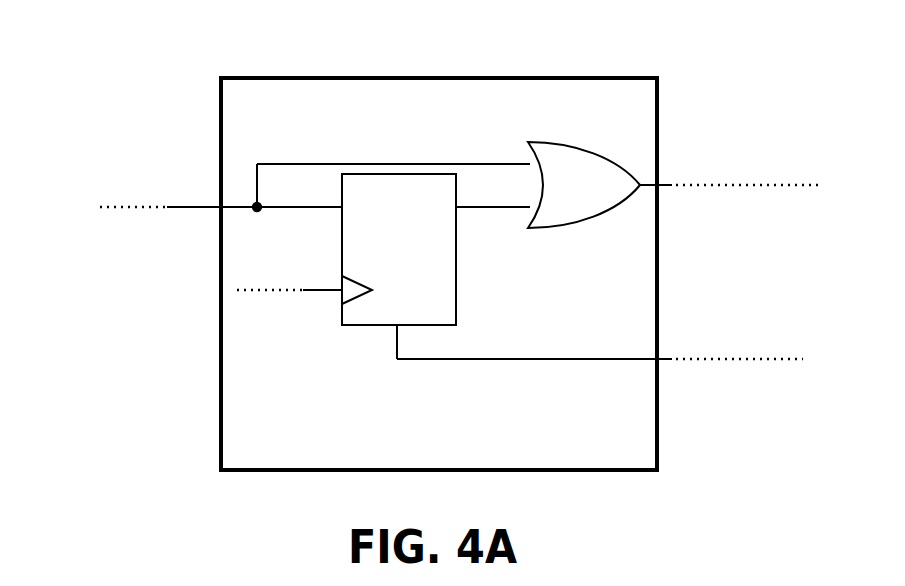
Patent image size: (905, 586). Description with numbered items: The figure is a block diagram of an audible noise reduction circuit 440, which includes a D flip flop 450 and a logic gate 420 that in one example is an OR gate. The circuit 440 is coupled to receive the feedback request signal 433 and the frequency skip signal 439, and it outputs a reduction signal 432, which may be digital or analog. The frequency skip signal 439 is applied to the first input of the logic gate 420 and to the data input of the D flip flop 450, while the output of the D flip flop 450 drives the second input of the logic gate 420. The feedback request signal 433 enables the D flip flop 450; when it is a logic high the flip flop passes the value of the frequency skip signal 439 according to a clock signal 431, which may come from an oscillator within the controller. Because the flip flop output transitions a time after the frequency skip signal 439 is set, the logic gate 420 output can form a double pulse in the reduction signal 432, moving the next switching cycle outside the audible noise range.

The audible noise reduction circuit 440 is at (403, 71).
The D flip flop 450 is at (457, 302).
The logic gate 420 is at (595, 151).
The frequency skip signal 439 is at (70, 190).
The clock signal 431 is at (290, 274).
The reduction signal 432 is at (746, 156).
The feedback request signal 433 is at (750, 340).